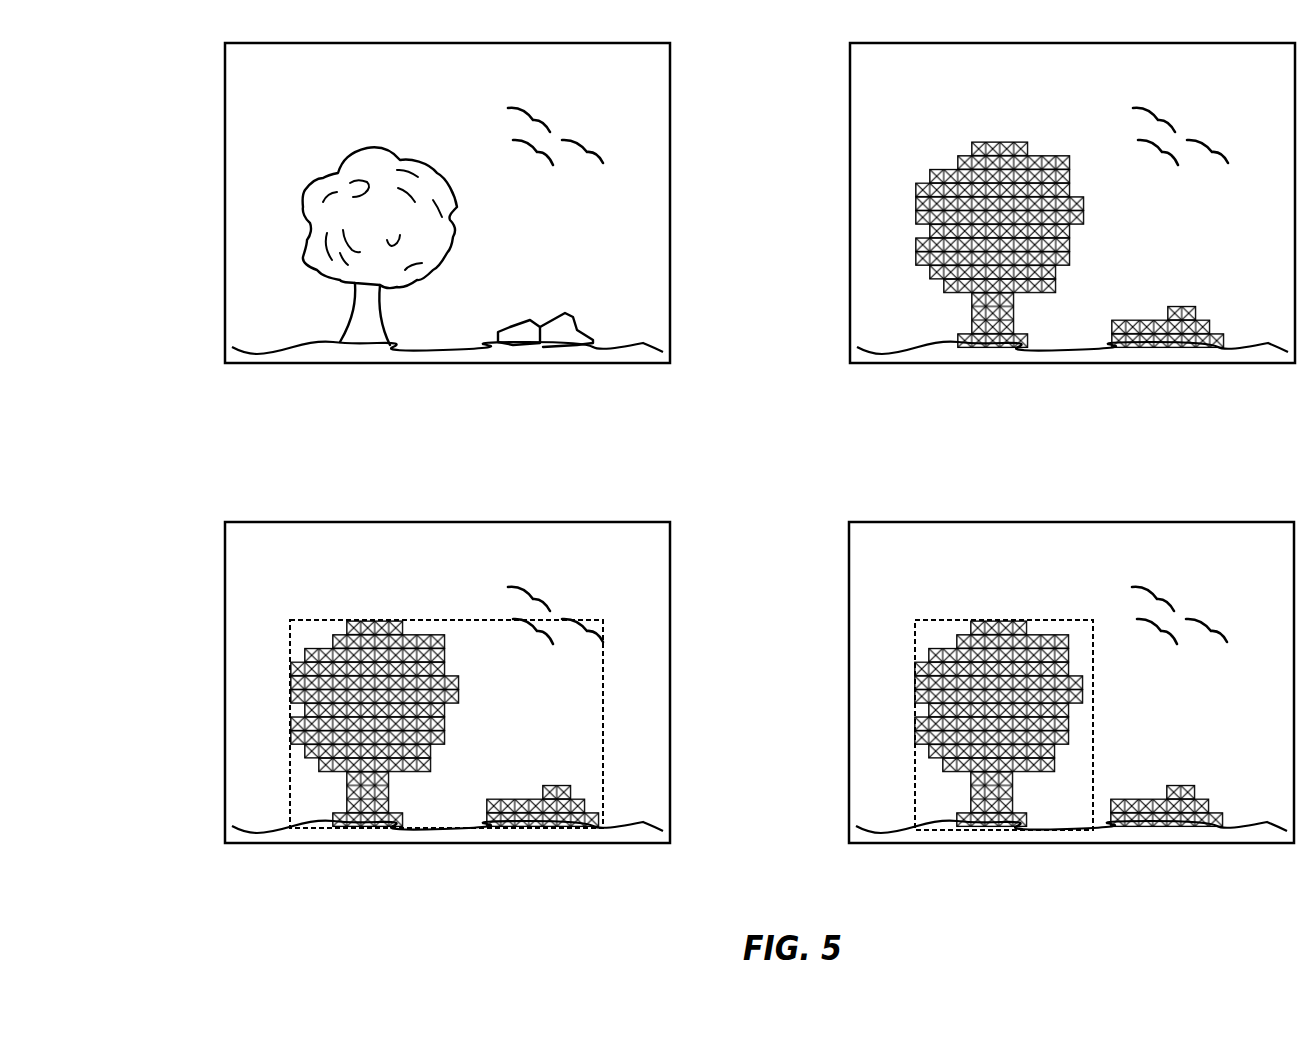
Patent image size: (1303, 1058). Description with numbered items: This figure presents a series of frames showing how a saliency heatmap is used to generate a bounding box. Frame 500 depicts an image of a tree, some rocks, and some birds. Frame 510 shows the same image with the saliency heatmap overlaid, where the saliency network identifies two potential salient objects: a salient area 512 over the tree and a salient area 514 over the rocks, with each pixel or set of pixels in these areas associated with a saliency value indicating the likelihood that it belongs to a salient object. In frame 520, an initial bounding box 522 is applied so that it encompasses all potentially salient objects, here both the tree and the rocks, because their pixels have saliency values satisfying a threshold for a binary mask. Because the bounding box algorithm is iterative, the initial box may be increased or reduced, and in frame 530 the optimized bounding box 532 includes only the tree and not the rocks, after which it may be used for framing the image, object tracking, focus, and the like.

The frame 500 is at (225, 165).
The frame 510 is at (848, 188).
The salient area 512 is at (916, 258).
The salient area 514 is at (1210, 332).
The frame 520 is at (225, 665).
The initial bounding box 522 is at (600, 710).
The frame 530 is at (849, 665).
The bounding box 532 is at (1090, 710).